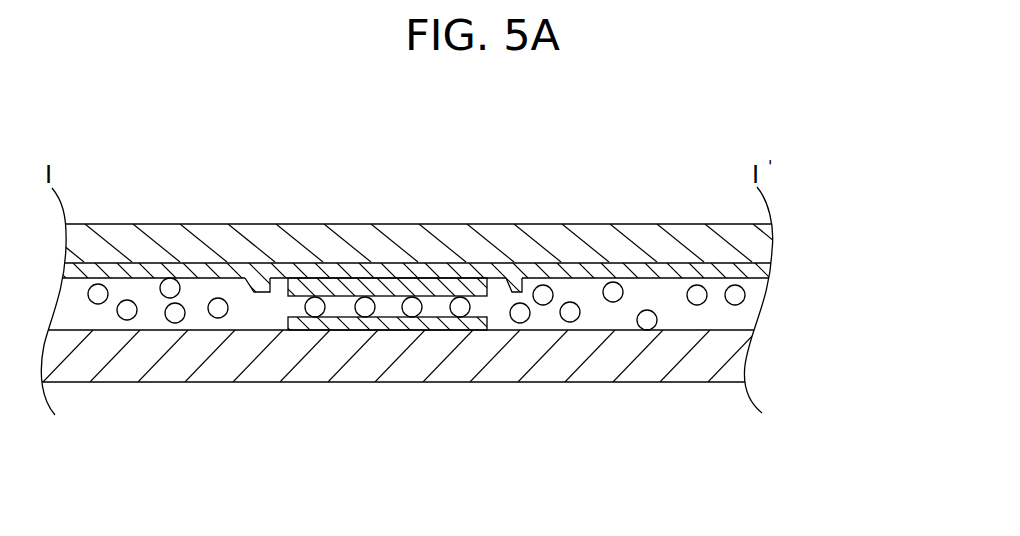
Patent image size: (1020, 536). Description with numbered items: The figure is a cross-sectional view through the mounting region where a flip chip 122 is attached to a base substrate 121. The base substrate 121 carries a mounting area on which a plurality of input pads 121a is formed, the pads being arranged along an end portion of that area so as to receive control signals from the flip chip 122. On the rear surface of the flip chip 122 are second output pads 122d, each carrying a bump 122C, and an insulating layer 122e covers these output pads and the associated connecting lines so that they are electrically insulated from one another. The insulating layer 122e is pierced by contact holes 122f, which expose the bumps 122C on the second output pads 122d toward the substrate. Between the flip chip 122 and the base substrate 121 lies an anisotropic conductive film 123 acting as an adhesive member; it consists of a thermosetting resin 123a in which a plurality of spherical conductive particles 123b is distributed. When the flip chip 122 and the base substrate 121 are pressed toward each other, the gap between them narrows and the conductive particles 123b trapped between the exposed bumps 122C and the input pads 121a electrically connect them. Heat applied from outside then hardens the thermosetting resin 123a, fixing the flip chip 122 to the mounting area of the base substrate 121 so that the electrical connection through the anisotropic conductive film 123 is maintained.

The base substrate 121 is at (457, 360).
The input pads 121a is at (389, 322).
The flip chip 122 is at (747, 242).
The bumps 122C is at (427, 285).
The second output pads 122d is at (360, 270).
The insulating layer 122e is at (747, 272).
The contact holes 122f is at (276, 293).
The anisotropic conductive film 123 is at (469, 305).
The thermosetting resin 123a is at (740, 320).
The conductive particles 123b is at (746, 295).